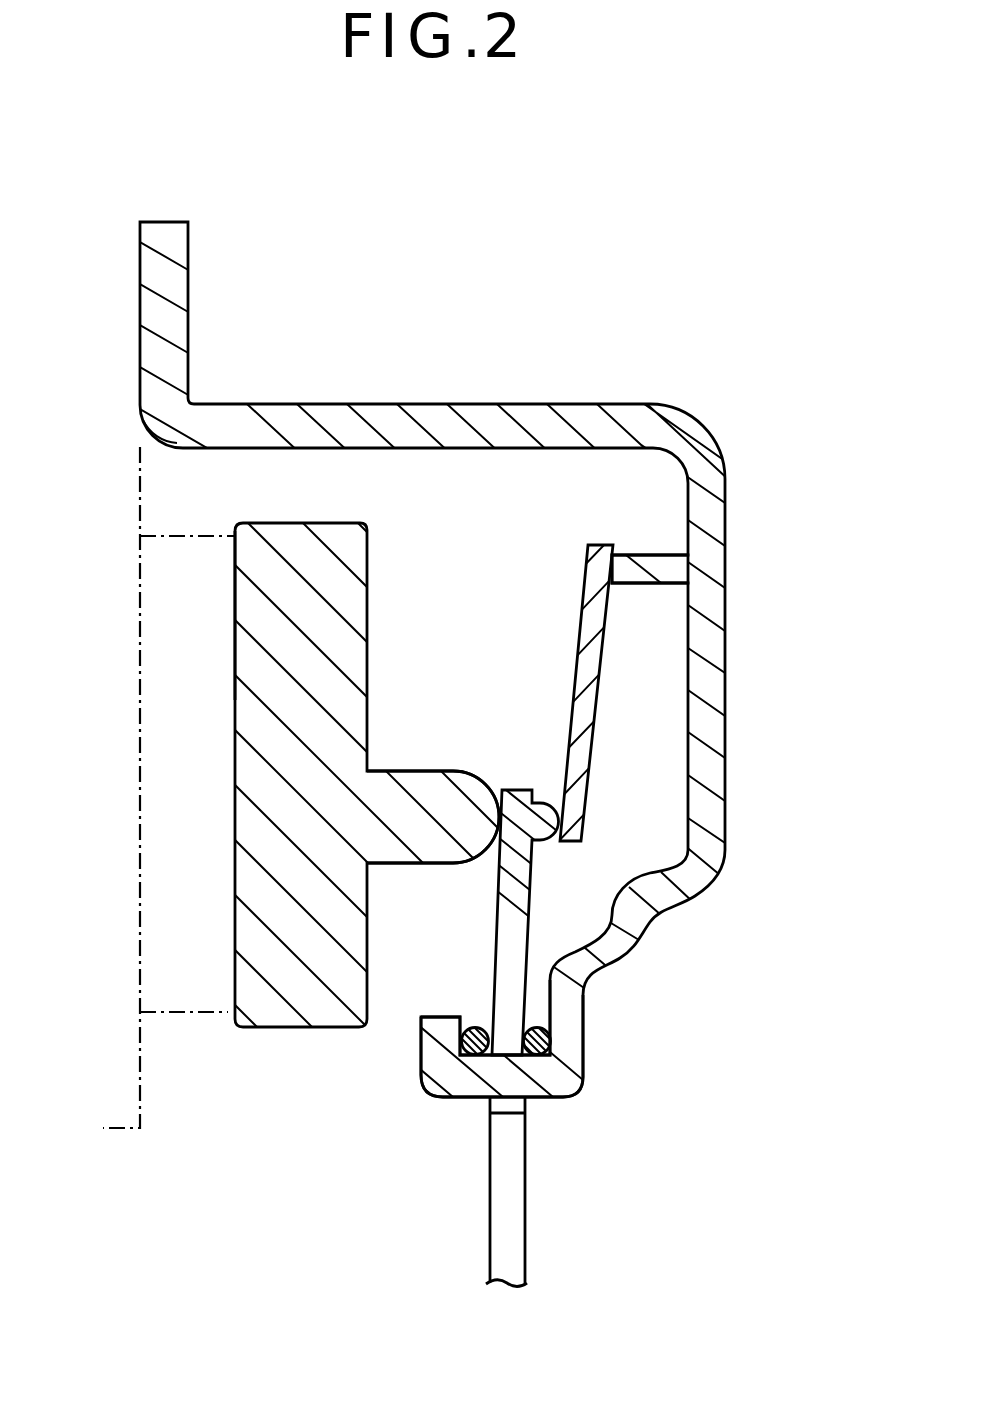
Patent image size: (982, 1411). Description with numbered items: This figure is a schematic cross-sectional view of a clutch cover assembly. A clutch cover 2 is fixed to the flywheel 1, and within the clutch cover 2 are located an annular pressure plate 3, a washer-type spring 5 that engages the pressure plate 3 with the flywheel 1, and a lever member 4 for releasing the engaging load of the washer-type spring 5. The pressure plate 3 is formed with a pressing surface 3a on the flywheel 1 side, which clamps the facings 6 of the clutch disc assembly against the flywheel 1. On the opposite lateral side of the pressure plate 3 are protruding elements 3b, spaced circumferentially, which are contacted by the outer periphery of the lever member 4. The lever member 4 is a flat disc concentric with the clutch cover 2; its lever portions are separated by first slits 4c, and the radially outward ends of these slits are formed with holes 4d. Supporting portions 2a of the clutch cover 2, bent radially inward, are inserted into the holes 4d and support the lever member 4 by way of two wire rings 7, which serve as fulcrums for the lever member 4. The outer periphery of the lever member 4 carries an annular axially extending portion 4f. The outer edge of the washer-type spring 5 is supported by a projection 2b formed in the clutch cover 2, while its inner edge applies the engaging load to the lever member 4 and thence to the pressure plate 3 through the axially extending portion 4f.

The flywheel 1 is at (78, 1131).
The clutch cover 2 is at (188, 268).
The supporting portions 2a is at (468, 1077).
The projection 2b is at (650, 572).
The pressure plate 3 is at (280, 1010).
The pressing surface 3a is at (235, 572).
The protruding elements 3b is at (455, 797).
The lever member 4 is at (676, 1015).
The first slits 4c is at (512, 1133).
The holes 4d is at (490, 1104).
The annular axially extending portion 4f is at (538, 827).
The washer-type spring 5 is at (583, 760).
The facings 6 is at (222, 1018).
The wire rings 7 is at (530, 1027).